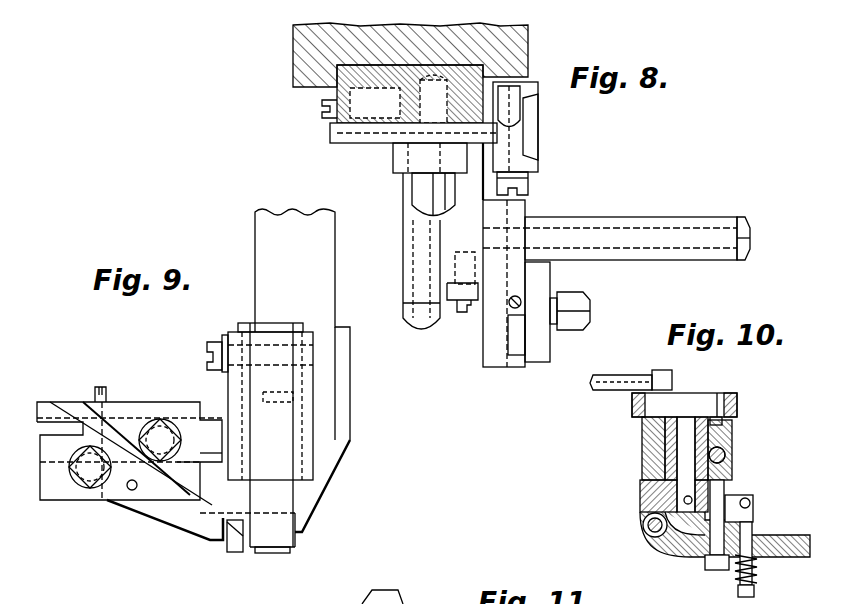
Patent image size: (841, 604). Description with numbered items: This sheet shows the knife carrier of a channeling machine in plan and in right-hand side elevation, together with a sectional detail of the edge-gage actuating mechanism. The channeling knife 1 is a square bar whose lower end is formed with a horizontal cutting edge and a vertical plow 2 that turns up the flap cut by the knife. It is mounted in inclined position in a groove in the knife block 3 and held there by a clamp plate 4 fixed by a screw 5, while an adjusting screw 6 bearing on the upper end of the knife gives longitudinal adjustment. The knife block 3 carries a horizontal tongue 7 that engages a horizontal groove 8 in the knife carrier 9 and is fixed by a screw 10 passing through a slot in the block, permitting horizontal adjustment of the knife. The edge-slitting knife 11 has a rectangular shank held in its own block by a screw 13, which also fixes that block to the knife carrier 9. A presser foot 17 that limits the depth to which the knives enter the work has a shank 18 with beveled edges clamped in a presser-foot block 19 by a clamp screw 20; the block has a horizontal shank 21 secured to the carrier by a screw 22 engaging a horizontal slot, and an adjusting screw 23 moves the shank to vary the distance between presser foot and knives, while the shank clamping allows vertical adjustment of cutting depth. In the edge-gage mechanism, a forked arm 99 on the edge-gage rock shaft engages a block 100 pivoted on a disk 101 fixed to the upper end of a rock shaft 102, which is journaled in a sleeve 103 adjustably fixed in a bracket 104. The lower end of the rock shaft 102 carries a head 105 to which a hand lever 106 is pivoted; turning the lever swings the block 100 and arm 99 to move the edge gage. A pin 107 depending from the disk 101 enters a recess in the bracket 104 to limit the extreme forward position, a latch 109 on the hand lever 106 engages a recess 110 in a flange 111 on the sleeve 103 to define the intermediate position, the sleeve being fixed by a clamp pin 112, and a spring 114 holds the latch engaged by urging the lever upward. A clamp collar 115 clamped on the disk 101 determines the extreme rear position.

In FIG. 9, the channeling knife 1 is at (205, 538).
In FIG. 9, the vertical plow 2 is at (235, 553).
In FIG. 8, the knife block 3 is at (499, 356).
In FIG. 9, the knife block 3 is at (132, 408).
In FIG. 8, the clamp plate 4 is at (543, 353).
In FIG. 9, the clamp plate 4 is at (122, 490).
In FIG. 8, the screw 5 is at (589, 313).
In FIG. 9, the screw 5 is at (85, 476).
In FIG. 8, the adjusting screw 6 is at (522, 299).
In FIG. 9, the adjusting screw 6 is at (102, 390).
In FIG. 8, the horizontal tongue 7 is at (481, 346).
In FIG. 9, the horizontal groove 8 is at (212, 432).
In FIG. 8, the knife carrier 9 is at (337, 72).
In FIG. 9, the knife carrier 9 is at (327, 462).
In FIG. 8, the screw 10 is at (738, 229).
In FIG. 9, the screw 10 is at (163, 422).
In FIG. 9, the edge-slitting knife 11 is at (275, 553).
In FIG. 8, the screw 13 is at (407, 315).
In FIG. 9, the presser foot 17 is at (283, 533).
In FIG. 8, the shank 18 is at (531, 127).
In FIG. 9, the shank 18 is at (270, 327).
In FIG. 9, the presser-foot block 19 is at (308, 427).
In FIG. 8, the clamp screw 20 is at (523, 186).
In FIG. 9, the clamp screw 20 is at (212, 343).
In FIG. 8, the horizontal shank 21 is at (412, 128).
In FIG. 8, the screw 22 is at (423, 200).
In FIG. 8, the adjusting screw 23 is at (325, 122).
In FIG. 10, the arm 99 is at (610, 375).
In FIG. 10, the block 100 is at (673, 373).
In FIG. 10, the disk 101 is at (693, 404).
In FIG. 10, the rock shaft 102 is at (732, 437).
In FIG. 10, the sleeve 103 is at (733, 468).
In FIG. 10, the bracket 104 is at (653, 467).
In FIG. 10, the head 105 is at (648, 503).
In FIG. 10, the hand lever 106 is at (678, 554).
In FIG. 10, the pin 107 is at (730, 422).
In FIG. 10, the latch 109 is at (754, 512).
In FIG. 10, the recess 110 is at (730, 487).
In FIG. 10, the flange 111 is at (648, 485).
In FIG. 10, the clamp pin 112 is at (732, 450).
In FIG. 10, the spring 114 is at (757, 576).
In FIG. 10, the clamp collar 115 is at (612, 401).